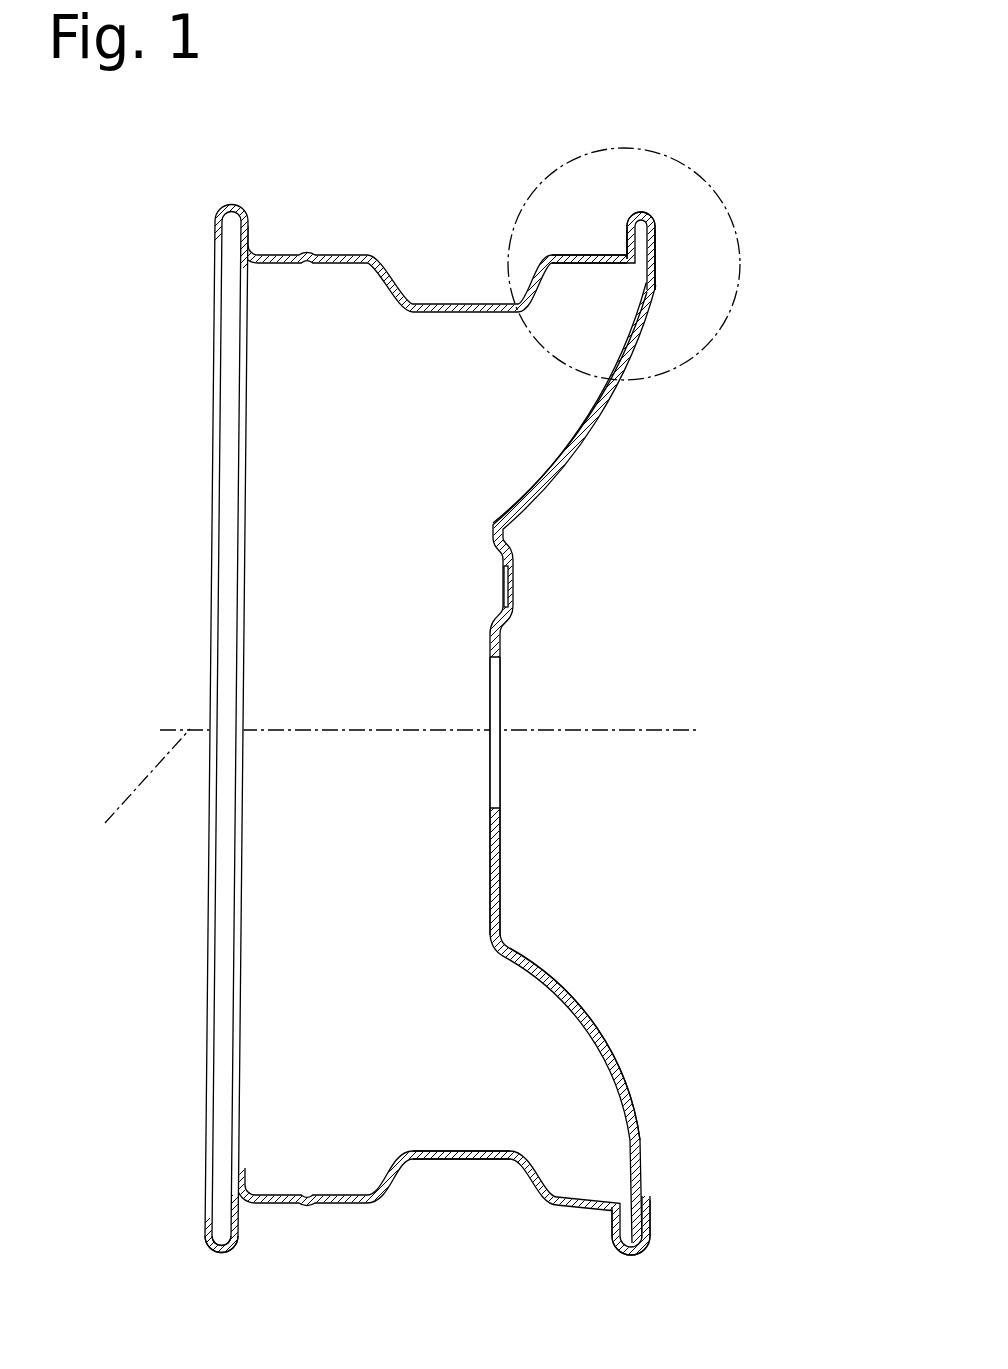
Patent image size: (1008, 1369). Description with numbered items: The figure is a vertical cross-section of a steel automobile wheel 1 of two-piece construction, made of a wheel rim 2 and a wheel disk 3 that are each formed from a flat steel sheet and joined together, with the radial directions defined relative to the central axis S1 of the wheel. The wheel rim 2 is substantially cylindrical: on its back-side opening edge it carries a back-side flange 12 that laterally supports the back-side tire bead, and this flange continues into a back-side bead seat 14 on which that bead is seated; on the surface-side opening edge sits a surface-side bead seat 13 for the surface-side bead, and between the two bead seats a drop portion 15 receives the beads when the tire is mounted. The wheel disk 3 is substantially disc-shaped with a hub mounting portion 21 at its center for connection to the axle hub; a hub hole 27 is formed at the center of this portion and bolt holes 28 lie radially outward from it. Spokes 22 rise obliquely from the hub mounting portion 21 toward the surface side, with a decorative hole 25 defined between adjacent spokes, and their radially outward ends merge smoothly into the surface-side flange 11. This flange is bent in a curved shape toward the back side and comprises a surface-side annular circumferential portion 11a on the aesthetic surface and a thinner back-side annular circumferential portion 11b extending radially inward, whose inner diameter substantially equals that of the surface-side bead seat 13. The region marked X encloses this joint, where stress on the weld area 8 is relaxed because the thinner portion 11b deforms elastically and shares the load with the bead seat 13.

The automobile wheel 1 is at (800, 438).
The wheel rim 2 is at (353, 257).
The wheel disk 3 is at (493, 833).
The weld area 8 is at (620, 250).
The surface-side flange 11 is at (657, 220).
The surface-side annular circumferential portion 11a is at (655, 238).
The back-side annular circumferential portion 11b is at (624, 230).
The back-side flange 12 is at (227, 207).
The surface-side bead seat 13 is at (580, 1207).
The back-side bead seat 14 is at (265, 1207).
The drop portion 15 is at (460, 1153).
The hub mounting portion 21 is at (497, 873).
The spokes 22 is at (612, 403).
The decorative hole 25 is at (610, 1063).
The hub hole 27 is at (497, 718).
The bolt holes 28 is at (508, 587).
The enlarged detail region X is at (733, 220).
The central axis S1 is at (136, 800).